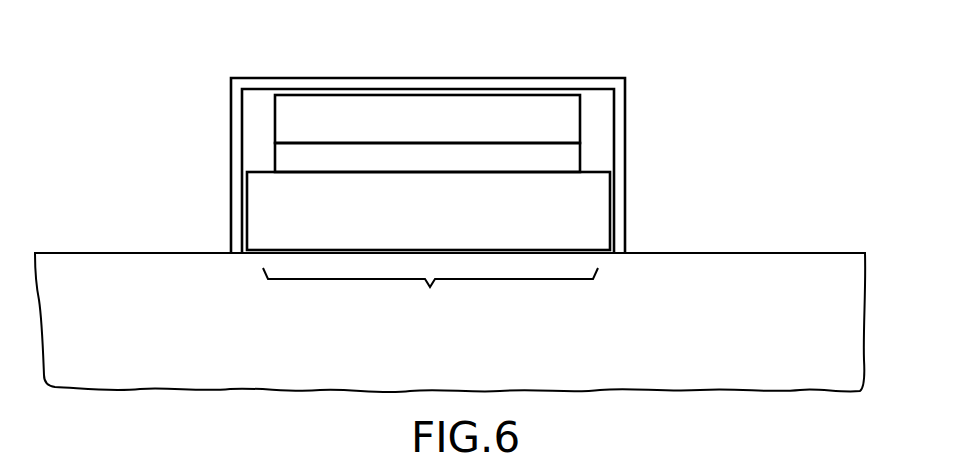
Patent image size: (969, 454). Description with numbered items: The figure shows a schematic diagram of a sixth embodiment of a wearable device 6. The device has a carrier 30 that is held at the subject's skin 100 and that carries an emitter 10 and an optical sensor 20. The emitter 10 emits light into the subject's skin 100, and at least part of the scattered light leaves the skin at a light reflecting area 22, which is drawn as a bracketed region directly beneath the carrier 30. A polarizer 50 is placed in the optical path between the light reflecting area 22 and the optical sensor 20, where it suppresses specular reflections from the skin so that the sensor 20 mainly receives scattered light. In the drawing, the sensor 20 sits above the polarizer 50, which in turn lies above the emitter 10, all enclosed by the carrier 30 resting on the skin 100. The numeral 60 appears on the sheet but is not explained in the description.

The wearable device 6 is at (731, 104).
The emitter 10 is at (590, 208).
The optical sensor 20 is at (567, 118).
The light reflecting area 22 is at (430, 292).
The carrier 30 is at (406, 79).
The polarizer 50 is at (567, 157).
The sheet marker 60 is at (70, 440).
The subject's skin 100 is at (777, 273).